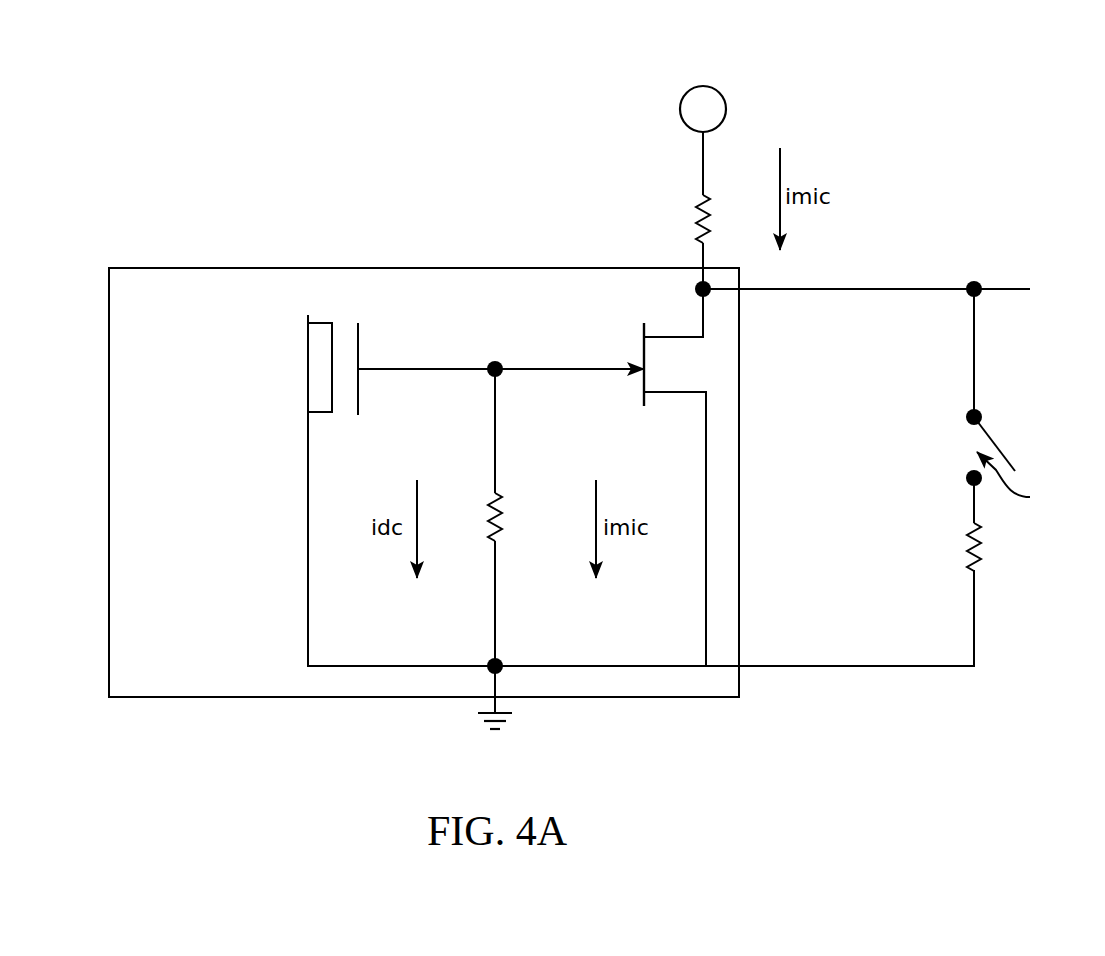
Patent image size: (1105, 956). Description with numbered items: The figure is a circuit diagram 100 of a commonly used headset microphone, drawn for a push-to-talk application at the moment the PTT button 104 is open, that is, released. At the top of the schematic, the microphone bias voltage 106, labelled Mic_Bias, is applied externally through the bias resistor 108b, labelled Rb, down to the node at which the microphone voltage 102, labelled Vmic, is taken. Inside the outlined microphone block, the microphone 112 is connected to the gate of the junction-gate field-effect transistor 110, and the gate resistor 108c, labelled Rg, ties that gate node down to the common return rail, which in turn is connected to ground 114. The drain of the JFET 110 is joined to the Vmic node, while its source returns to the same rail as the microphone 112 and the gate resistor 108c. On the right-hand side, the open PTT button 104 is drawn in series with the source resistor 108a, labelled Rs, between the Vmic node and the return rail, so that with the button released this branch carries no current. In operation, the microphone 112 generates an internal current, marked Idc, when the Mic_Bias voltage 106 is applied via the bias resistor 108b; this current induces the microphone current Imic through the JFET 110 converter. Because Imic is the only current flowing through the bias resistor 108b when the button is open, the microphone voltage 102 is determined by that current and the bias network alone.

The circuit diagram 100 is at (138, 152).
The microphone voltage 102 is at (895, 293).
The PTT button 104 is at (991, 401).
The microphone bias voltage 106 is at (718, 77).
The source resistor 108a is at (937, 524).
The bias resistor 108b is at (665, 210).
The gate resistor 108c is at (530, 509).
The junction-gate field-effect transistor (JFET) 110 is at (719, 477).
The microphone 112 is at (344, 350).
The ground 114 is at (496, 720).